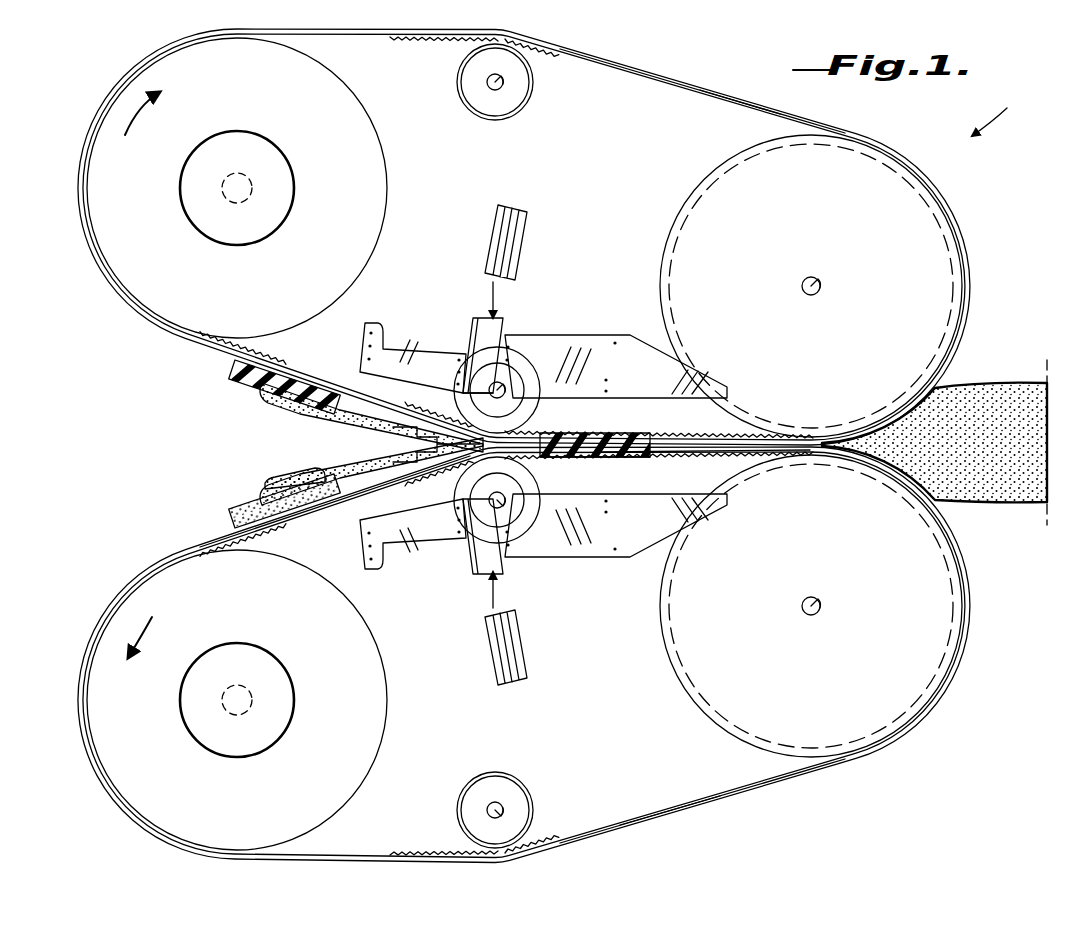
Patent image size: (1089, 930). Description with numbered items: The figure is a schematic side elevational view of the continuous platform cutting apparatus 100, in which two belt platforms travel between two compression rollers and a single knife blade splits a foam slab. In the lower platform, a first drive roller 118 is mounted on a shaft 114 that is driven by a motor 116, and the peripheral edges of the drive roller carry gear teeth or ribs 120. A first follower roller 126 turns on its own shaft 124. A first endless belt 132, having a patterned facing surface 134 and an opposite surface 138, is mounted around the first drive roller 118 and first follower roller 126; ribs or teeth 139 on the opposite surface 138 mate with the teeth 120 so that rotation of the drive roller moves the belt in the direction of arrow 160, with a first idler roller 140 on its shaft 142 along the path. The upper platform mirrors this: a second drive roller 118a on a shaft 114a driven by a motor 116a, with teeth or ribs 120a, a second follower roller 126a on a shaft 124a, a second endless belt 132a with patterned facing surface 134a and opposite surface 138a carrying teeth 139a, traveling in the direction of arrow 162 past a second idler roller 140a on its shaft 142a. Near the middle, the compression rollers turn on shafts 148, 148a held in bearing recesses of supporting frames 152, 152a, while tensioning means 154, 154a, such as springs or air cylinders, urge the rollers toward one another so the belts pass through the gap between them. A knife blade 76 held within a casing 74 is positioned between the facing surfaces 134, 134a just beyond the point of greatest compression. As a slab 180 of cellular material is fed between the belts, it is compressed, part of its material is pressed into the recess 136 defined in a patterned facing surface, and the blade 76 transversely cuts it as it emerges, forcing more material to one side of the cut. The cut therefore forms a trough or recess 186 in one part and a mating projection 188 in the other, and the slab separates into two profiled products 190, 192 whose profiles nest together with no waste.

The continuous platform cutting apparatus 100 is at (1055, 104).
The shaft 114a is at (242, 189).
The shaft 114 is at (242, 700).
The motor 116a is at (265, 158).
The motor 116 is at (272, 730).
The second drive roller 118a is at (362, 163).
The first drive roller 118 is at (150, 775).
The gear teeth or ribs 120a is at (212, 348).
The gear teeth or ribs 120 is at (245, 562).
The shaft 124a is at (815, 273).
The shaft 124 is at (811, 616).
The second follower roller 126a is at (898, 203).
The first follower roller 126 is at (945, 682).
The second endless belt 132a is at (740, 96).
The first endless belt 132 is at (745, 839).
The patterned facing surface 134a is at (640, 437).
The patterned facing surface 134 is at (632, 457).
The recess 136 is at (287, 520).
The opposite surface 138a is at (765, 118).
The opposite surface 138 is at (688, 795).
The ribs or teeth 139a is at (450, 42).
The ribs or teeth 139 is at (540, 828).
The second idler roller 140a is at (500, 105).
The first idler roller 140 is at (485, 787).
The shaft 142a is at (500, 84).
The shaft 142 is at (497, 802).
The shaft 148a is at (500, 388).
The shaft 148 is at (500, 502).
The supporting frame 152a is at (420, 363).
The supporting frame 152 is at (628, 535).
The tensioning means 154a is at (508, 228).
The tensioning means 154 is at (517, 660).
The arrow 160 is at (130, 632).
The arrow 162 is at (104, 104).
The slab 180 is at (1005, 410).
The trough or recess 186 is at (270, 400).
The mating projection 188 is at (278, 483).
The profiled product 190 is at (233, 375).
The profiled product 192 is at (240, 519).
The casing 74 is at (393, 447).
The knife blade 76 is at (459, 414).